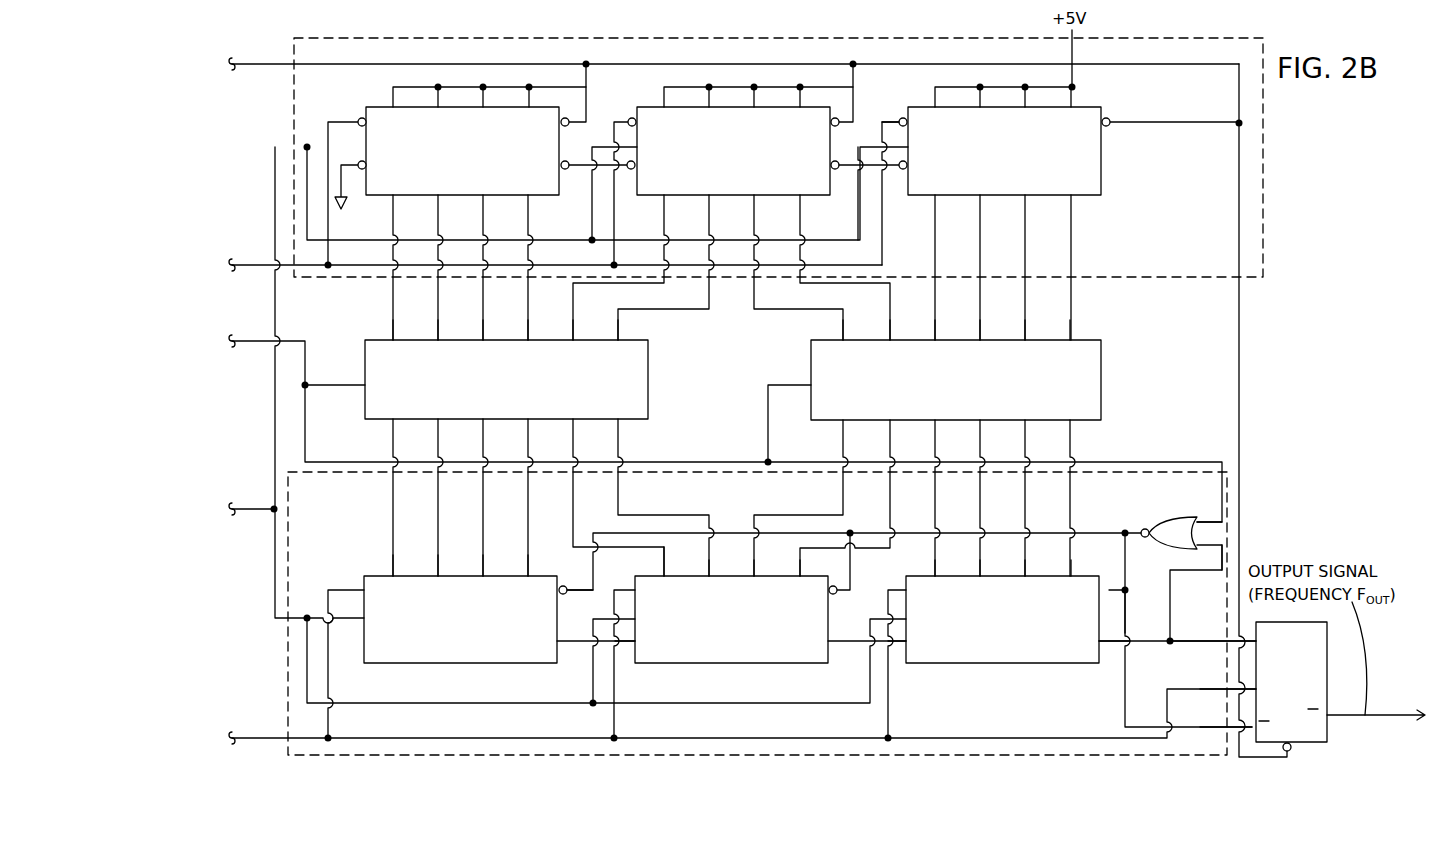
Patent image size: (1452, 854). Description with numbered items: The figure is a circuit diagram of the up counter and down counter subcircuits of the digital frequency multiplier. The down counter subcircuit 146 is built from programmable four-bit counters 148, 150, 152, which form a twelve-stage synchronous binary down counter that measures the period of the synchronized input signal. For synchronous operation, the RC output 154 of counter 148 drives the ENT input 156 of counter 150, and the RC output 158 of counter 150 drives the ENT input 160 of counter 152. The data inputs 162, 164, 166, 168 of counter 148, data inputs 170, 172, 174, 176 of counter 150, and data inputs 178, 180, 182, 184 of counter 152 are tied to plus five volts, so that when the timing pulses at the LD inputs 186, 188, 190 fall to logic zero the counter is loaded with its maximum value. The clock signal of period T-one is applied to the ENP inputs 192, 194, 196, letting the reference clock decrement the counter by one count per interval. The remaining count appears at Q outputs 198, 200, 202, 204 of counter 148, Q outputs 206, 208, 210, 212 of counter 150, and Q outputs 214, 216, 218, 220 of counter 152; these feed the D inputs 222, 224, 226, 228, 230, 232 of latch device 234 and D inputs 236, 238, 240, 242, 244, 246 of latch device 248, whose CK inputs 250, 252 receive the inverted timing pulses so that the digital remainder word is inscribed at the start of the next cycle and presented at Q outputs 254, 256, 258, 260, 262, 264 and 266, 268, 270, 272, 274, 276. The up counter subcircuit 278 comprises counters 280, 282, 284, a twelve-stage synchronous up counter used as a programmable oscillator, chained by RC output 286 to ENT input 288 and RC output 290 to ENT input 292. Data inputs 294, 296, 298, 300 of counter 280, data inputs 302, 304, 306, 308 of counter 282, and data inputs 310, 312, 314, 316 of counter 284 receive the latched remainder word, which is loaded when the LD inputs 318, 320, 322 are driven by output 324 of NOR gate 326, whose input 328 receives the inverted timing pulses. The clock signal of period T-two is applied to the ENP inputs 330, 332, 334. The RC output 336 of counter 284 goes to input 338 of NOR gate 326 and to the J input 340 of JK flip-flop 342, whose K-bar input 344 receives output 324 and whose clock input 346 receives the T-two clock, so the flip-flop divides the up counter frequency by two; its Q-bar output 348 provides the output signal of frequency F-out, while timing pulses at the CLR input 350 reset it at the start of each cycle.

The down counter subcircuit 146 is at (1267, 206).
The programmable four-bit counter 148 is at (462, 151).
The programmable four-bit counter 150 is at (733, 151).
The programmable four-bit counter 152 is at (1004, 151).
The RC output 154 is at (575, 172).
The ENT input 156 is at (628, 172).
The RC output 158 is at (845, 172).
The ENT input 160 is at (891, 172).
The data input 162 is at (392, 99).
The data input 164 is at (437, 97).
The data input 166 is at (482, 97).
The data input 168 is at (528, 97).
The data input 170 is at (663, 97).
The data input 172 is at (708, 97).
The data input 174 is at (753, 97).
The data input 176 is at (799, 97).
The data input 178 is at (934, 97).
The data input 180 is at (979, 97).
The data input 182 is at (1024, 97).
The data input 184 is at (1070, 97).
The LD input 186 is at (585, 100).
The LD input 188 is at (852, 100).
The LD input 190 is at (1239, 97).
The ENP input 192 is at (345, 118).
The ENP input 194 is at (620, 120).
The ENP input 196 is at (892, 121).
The Q output 198 is at (392, 229).
The Q output 200 is at (437, 229).
The Q output 202 is at (482, 229).
The Q output 204 is at (527, 229).
The Q output 206 is at (663, 217).
The Q output 208 is at (708, 204).
The Q output 210 is at (753, 204).
The Q output 212 is at (799, 204).
The Q output 214 is at (934, 268).
The Q output 216 is at (979, 268).
The Q output 218 is at (1024, 268).
The Q output 220 is at (1070, 268).
The D input 222 is at (392, 325).
The D input 224 is at (437, 325).
The D input 226 is at (482, 325).
The D input 228 is at (527, 325).
The D input 230 is at (572, 325).
The D input 232 is at (617, 330).
The latch device 234 is at (648, 382).
The D input 236 is at (843, 323).
The D input 238 is at (888, 323).
The D input 240 is at (934, 323).
The D input 242 is at (979, 323).
The D input 244 is at (1024, 323).
The D input 246 is at (1069, 323).
The latch device 248 is at (1101, 383).
The CK input 250 is at (327, 388).
The CK input 252 is at (788, 388).
The Q output 254 is at (392, 427).
The Q output 256 is at (437, 427).
The Q output 258 is at (482, 427).
The Q output 260 is at (527, 427).
The Q output 262 is at (572, 427).
The Q output 264 is at (617, 427).
The Q output 266 is at (843, 445).
The Q output 268 is at (889, 429).
The Q output 270 is at (934, 429).
The Q output 272 is at (979, 429).
The Q output 274 is at (1024, 429).
The Q output 276 is at (1069, 429).
The up counter subcircuit 278 is at (284, 640).
The programmable four-bit counter 280 is at (453, 663).
The programmable four-bit counter 282 is at (730, 663).
The programmable four-bit counter 284 is at (1003, 663).
The RC output 286 is at (573, 644).
The ENT input 288 is at (622, 645).
The RC output 290 is at (840, 645).
The ENT input 292 is at (898, 645).
The data input 294 is at (392, 560).
The data input 296 is at (437, 560).
The data input 298 is at (482, 560).
The data input 300 is at (527, 560).
The data input 302 is at (660, 560).
The data input 304 is at (707, 563).
The data input 306 is at (752, 563).
The data input 308 is at (798, 563).
The data input 310 is at (934, 563).
The data input 312 is at (979, 563).
The data input 314 is at (1024, 563).
The data input 316 is at (1070, 563).
The LD input 318 is at (580, 594).
The LD input 320 is at (850, 594).
The LD input 322 is at (1122, 562).
The output 324 is at (1141, 528).
The NOR gate 326 is at (1162, 548).
The input 328 is at (1208, 520).
The ENP input 330 is at (328, 588).
The ENP input 332 is at (616, 590).
The ENP input 334 is at (888, 590).
The RC output 336 is at (1108, 648).
The input 338 is at (1208, 572).
The J input 340 is at (1245, 638).
The JK flip-flop 342 is at (1291, 685).
The K-bar input 344 is at (1245, 730).
The clock input 346 is at (1248, 685).
The Q-bar output 348 is at (1390, 717).
The CLR input 350 is at (1292, 748).